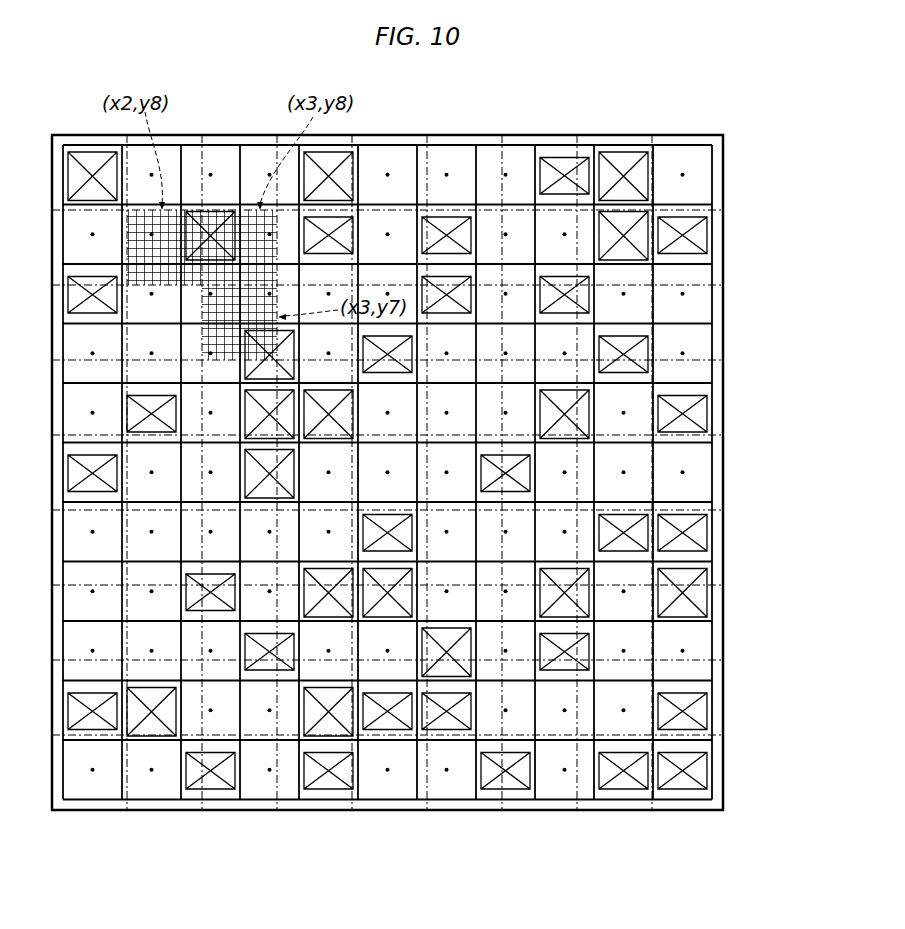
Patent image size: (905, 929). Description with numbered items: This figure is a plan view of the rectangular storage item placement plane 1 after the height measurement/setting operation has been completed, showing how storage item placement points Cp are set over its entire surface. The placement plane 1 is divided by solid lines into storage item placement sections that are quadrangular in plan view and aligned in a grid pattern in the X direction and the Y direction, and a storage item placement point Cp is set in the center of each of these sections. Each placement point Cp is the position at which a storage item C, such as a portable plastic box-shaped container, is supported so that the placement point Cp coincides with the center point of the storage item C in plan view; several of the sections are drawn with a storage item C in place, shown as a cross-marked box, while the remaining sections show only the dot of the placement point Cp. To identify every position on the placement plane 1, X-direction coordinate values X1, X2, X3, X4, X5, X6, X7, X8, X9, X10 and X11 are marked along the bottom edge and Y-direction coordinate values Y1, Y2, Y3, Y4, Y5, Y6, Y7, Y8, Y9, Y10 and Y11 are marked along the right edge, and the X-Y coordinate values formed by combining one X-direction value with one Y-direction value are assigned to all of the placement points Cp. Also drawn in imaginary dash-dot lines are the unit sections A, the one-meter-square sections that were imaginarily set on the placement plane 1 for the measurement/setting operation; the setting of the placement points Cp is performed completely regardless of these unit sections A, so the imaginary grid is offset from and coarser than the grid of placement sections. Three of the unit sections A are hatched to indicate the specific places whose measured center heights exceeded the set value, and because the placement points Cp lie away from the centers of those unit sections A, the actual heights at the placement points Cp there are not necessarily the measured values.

The storage item placement plane 1 is at (672, 137).
The storage item C is at (66, 183).
The storage item placement point Cp is at (210, 234).
The unit section A is at (450, 142).
The X-direction coordinate value X1 is at (92, 785).
The X-direction coordinate value X2 is at (152, 785).
The X-direction coordinate value X3 is at (210, 785).
The X-direction coordinate value X4 is at (270, 785).
The X-direction coordinate value X5 is at (328, 785).
The X-direction coordinate value X6 is at (388, 785).
The X-direction coordinate value X7 is at (446, 785).
The X-direction coordinate value X8 is at (506, 785).
The X-direction coordinate value X9 is at (564, 785).
The X-direction coordinate value X10 is at (624, 785).
The X-direction coordinate value X11 is at (682, 785).
The Y-direction coordinate value Y1 is at (698, 769).
The Y-direction coordinate value Y2 is at (698, 710).
The Y-direction coordinate value Y3 is at (698, 650).
The Y-direction coordinate value Y4 is at (698, 591).
The Y-direction coordinate value Y5 is at (698, 531).
The Y-direction coordinate value Y6 is at (698, 472).
The Y-direction coordinate value Y7 is at (698, 412).
The Y-direction coordinate value Y8 is at (698, 353).
The Y-direction coordinate value Y9 is at (698, 294).
The Y-direction coordinate value Y10 is at (698, 235).
The Y-direction coordinate value Y11 is at (698, 176).